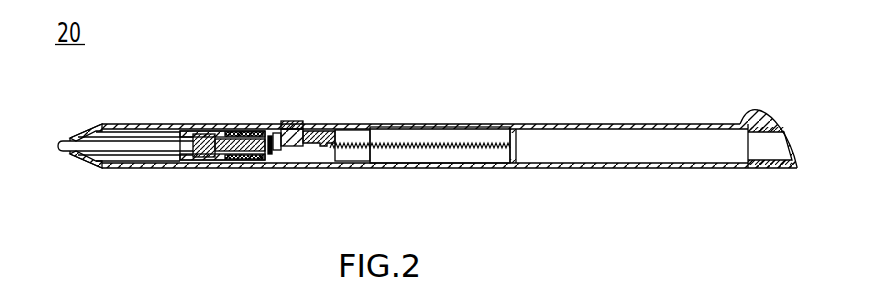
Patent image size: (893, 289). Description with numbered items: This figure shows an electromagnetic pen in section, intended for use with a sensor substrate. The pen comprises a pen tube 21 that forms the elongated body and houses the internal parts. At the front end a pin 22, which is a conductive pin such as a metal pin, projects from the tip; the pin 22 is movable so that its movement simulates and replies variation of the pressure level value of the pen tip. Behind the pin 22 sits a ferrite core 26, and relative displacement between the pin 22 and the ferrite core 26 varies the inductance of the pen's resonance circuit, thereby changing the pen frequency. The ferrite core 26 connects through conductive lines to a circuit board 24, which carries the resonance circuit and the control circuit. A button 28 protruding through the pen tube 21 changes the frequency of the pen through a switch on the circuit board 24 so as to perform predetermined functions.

The pen tube 21 is at (560, 123).
The pin 22 is at (130, 145).
The circuit board 24 is at (352, 143).
The ferrite core 26 is at (165, 137).
The button 28 is at (285, 123).